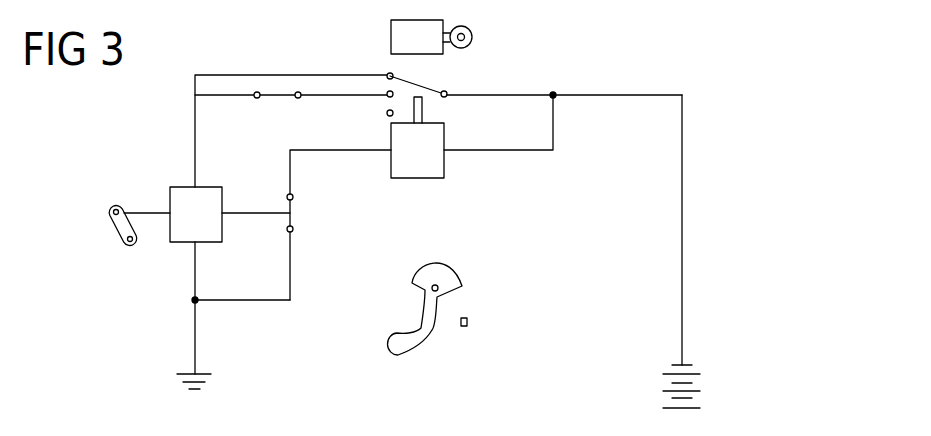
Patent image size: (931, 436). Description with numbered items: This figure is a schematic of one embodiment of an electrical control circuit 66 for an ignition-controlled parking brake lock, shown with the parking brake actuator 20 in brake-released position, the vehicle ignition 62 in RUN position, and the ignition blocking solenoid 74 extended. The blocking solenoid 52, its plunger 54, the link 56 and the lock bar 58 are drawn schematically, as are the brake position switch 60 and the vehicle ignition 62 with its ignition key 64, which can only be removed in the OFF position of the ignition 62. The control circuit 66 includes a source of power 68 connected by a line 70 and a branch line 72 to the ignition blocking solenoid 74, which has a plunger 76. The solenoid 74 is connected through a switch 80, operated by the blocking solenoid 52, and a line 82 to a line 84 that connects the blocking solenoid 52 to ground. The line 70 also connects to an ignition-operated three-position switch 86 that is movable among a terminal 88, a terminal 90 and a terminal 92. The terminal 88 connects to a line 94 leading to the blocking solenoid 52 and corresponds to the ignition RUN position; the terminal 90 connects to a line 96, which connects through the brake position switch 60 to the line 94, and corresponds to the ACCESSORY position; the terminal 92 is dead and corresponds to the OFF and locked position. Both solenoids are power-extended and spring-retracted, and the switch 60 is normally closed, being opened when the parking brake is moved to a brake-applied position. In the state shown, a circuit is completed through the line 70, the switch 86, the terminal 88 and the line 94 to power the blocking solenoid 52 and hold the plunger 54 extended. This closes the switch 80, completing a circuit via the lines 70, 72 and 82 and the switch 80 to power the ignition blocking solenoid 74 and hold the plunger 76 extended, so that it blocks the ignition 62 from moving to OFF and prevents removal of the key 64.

The parking brake actuator 20 is at (433, 333).
The blocking solenoid 52 is at (181, 187).
The plunger 54 is at (135, 213).
The link 56 is at (110, 218).
The lock bar 58 is at (120, 244).
The brake position switch 60 is at (275, 97).
The vehicle ignition 62 is at (461, 27).
The ignition key 64 is at (473, 38).
The control circuit 66 is at (624, 72).
The source of power 68 is at (697, 373).
The line 70 is at (682, 228).
The branch line 72 is at (527, 150).
The ignition blocking solenoid 74 is at (423, 178).
The plunger 76 is at (423, 103).
The switch 80 is at (295, 202).
The line 82 is at (253, 300).
The line 84 is at (195, 327).
The ignition-operated three-position switch 86 is at (425, 88).
The terminal 88 is at (390, 73).
The terminal 90 is at (388, 92).
The terminal 92 is at (387, 113).
The line 94 is at (235, 75).
The line 96 is at (315, 95).